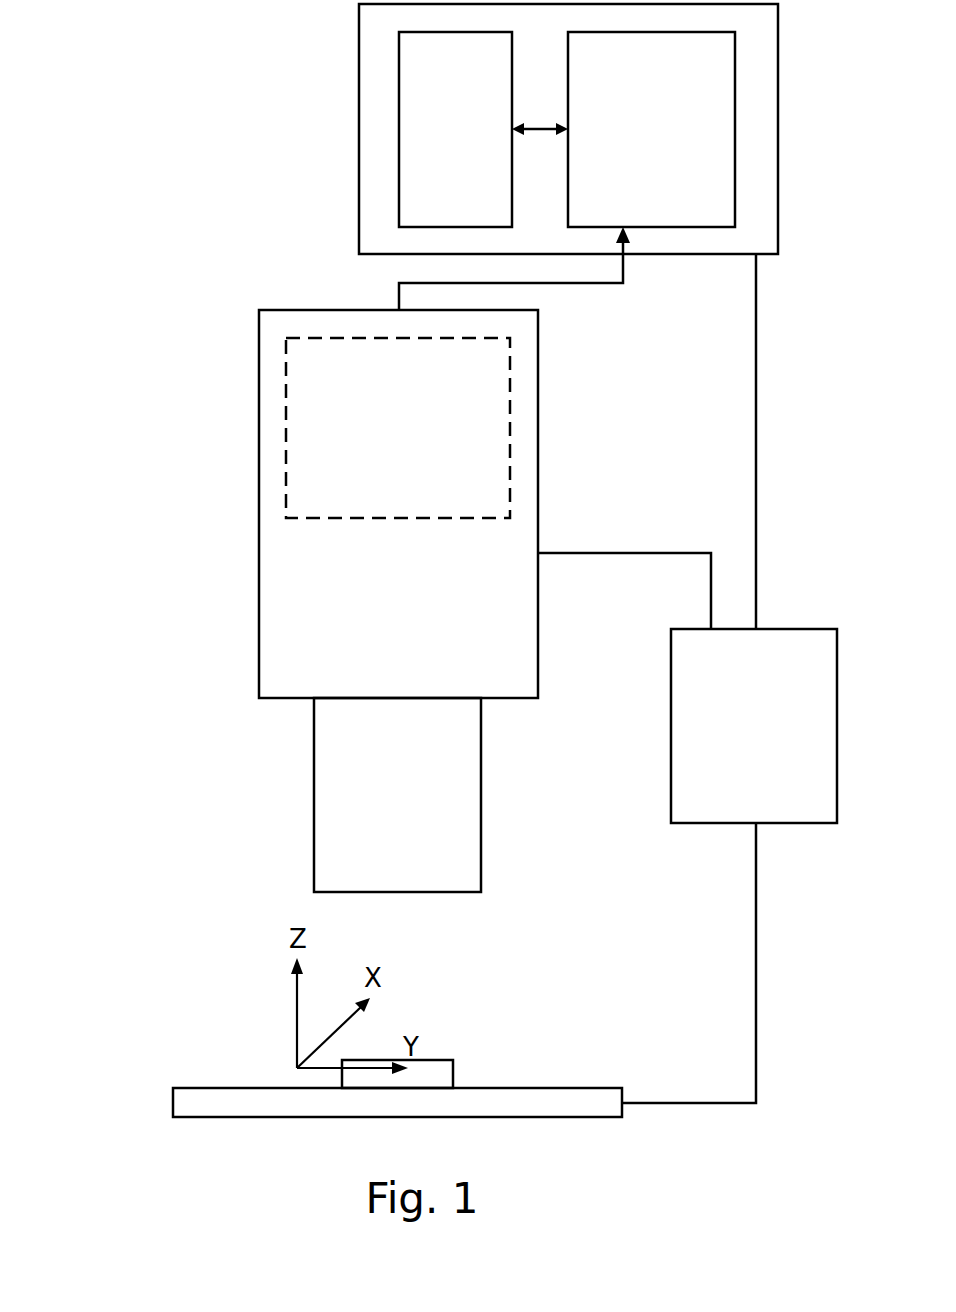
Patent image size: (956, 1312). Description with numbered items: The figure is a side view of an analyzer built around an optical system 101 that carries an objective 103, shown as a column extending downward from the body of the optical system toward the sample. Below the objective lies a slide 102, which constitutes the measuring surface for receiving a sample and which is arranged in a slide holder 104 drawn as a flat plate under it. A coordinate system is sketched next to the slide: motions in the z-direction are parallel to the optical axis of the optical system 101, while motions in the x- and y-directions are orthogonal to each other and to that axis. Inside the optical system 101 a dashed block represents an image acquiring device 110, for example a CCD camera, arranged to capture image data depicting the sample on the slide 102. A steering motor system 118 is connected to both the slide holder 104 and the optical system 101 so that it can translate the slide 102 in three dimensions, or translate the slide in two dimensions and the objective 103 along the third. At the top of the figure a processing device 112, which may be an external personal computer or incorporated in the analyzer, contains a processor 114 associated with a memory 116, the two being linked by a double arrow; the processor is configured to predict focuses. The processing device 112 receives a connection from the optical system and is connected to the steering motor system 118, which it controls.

The optical system 101 is at (195, 634).
The slide 102 is at (453, 1060).
The objective 103 is at (373, 866).
The slide holder 104 is at (188, 1099).
The image acquiring device 110 is at (369, 494).
The processing device 112 is at (378, 32).
The processor 114 is at (621, 184).
The memory 116 is at (427, 184).
The steering motor system 118 is at (730, 738).